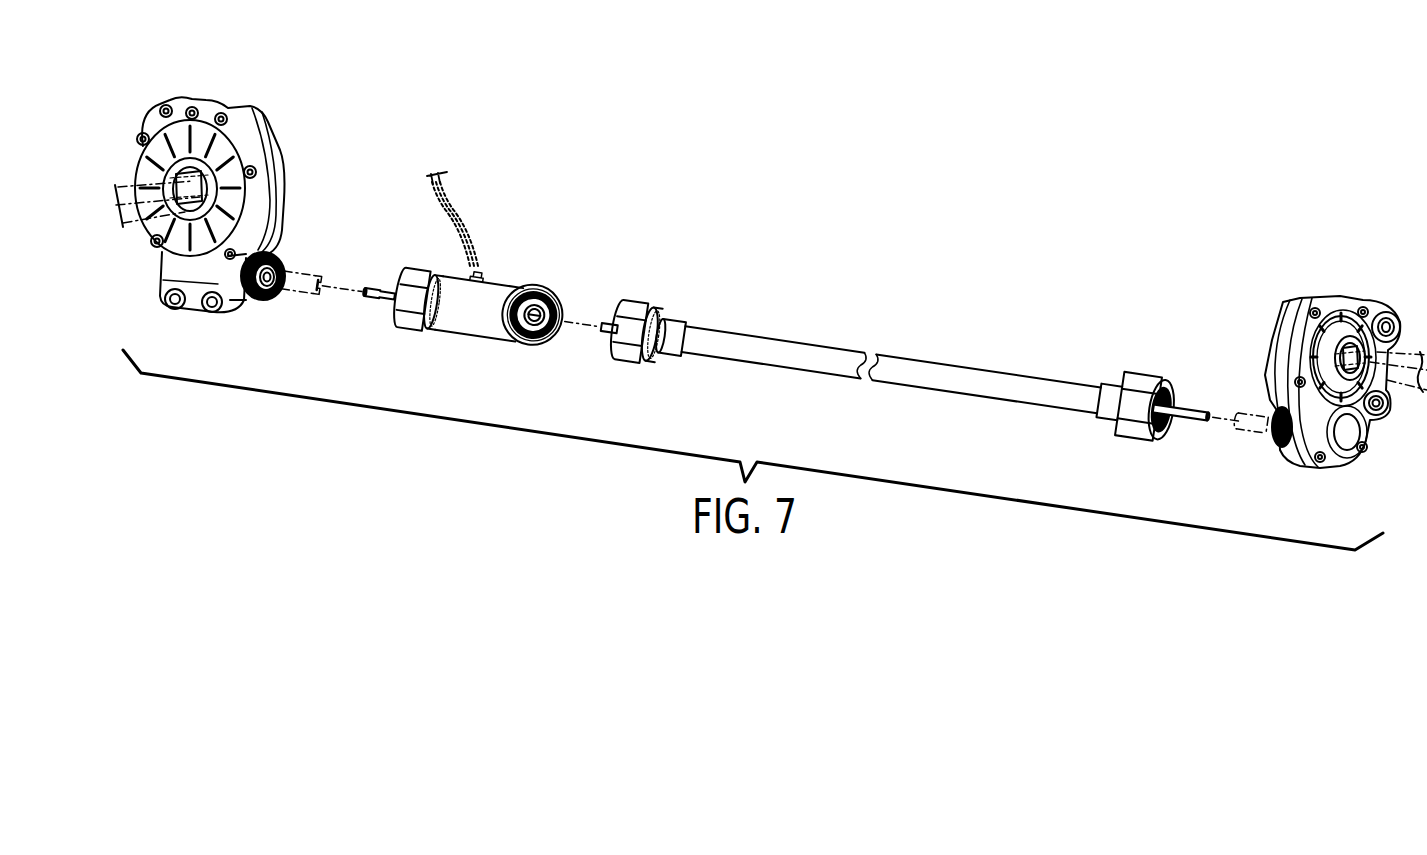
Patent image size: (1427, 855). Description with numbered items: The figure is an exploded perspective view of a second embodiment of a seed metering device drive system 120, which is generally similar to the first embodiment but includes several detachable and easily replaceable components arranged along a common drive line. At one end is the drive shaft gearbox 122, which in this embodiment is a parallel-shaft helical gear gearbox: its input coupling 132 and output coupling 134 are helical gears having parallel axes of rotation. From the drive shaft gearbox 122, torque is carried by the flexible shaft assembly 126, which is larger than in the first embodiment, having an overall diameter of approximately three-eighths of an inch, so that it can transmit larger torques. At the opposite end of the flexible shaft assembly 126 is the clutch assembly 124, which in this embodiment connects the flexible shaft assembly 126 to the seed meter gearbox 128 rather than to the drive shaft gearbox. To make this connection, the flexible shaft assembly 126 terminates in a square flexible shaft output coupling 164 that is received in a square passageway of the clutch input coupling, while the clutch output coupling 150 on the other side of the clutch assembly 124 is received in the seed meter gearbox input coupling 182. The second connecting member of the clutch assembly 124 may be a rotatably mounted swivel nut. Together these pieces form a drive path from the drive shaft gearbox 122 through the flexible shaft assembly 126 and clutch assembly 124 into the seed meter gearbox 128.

The seed metering device drive system 120 is at (905, 158).
The drive shaft gearbox 122 is at (1308, 298).
The clutch assembly 124 is at (520, 281).
The flexible shaft assembly 126 is at (916, 352).
The seed meter gearbox 128 is at (268, 143).
The input coupling 132 is at (1350, 342).
The output coupling 134 is at (1258, 433).
The clutch output coupling 150 is at (378, 299).
The flexible shaft output coupling 164 is at (603, 320).
The seed meter gearbox input coupling 182 is at (290, 294).